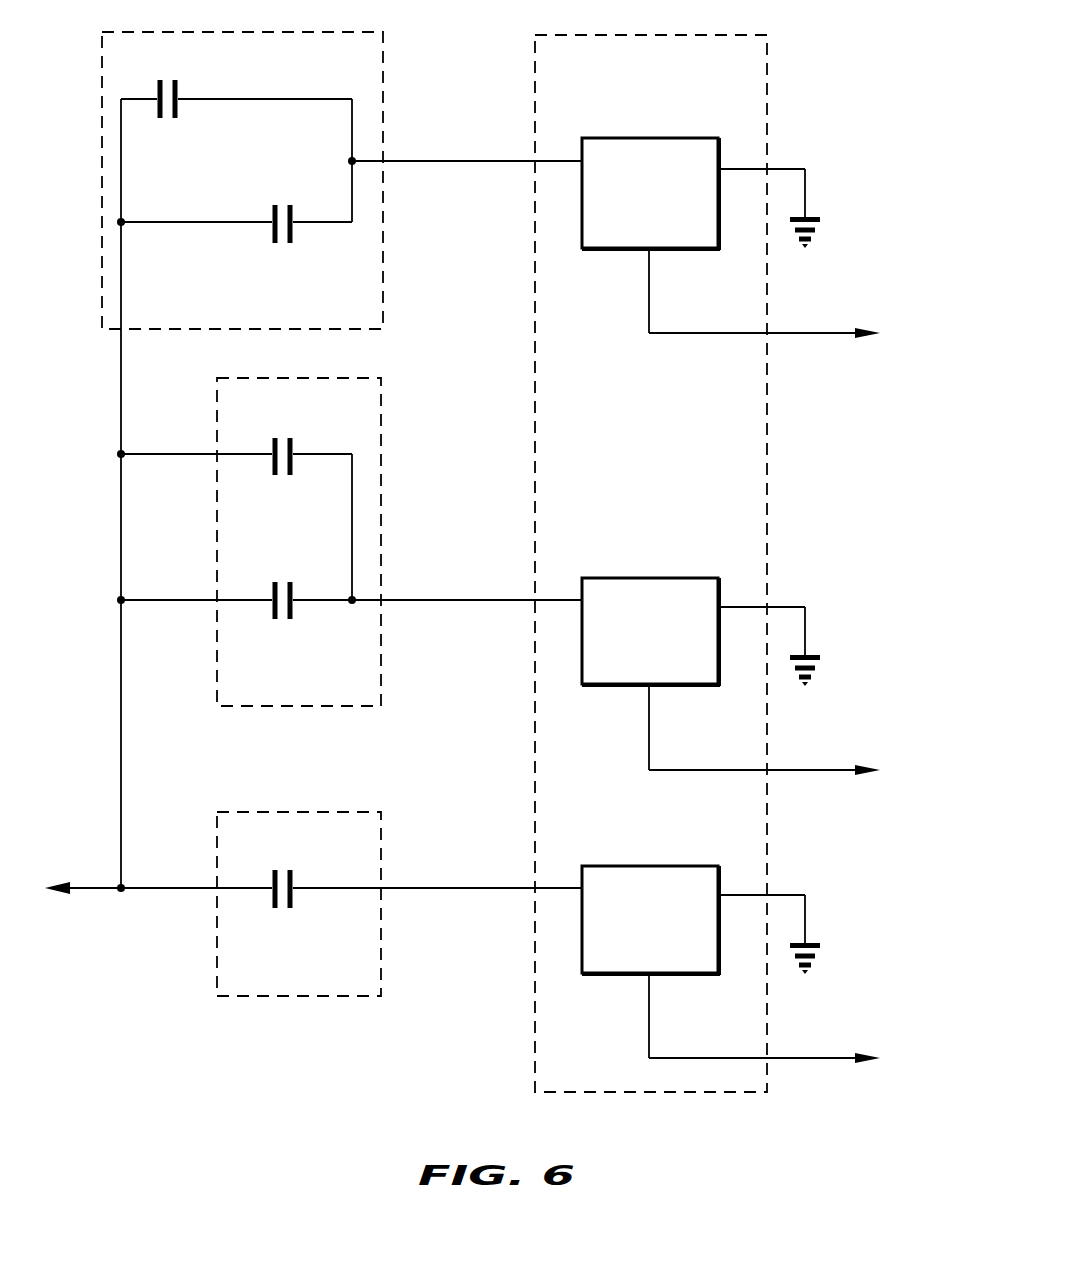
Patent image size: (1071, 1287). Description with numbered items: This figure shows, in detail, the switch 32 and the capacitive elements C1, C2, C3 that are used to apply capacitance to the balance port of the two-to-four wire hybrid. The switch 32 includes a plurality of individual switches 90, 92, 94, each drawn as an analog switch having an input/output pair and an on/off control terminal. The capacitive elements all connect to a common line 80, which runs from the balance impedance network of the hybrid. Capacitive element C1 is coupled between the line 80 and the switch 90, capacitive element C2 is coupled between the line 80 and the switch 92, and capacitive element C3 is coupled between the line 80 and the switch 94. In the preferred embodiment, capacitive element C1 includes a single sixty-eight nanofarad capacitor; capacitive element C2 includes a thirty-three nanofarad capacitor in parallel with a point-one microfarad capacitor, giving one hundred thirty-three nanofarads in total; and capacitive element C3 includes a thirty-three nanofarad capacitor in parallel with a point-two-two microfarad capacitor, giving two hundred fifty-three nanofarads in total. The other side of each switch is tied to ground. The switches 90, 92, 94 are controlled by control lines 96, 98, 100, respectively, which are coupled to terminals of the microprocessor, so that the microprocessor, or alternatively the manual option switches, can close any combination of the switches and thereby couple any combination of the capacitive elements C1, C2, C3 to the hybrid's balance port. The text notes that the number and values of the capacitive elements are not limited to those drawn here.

The switching circuit 32 is at (776, 111).
The line 80 is at (88, 890).
The switch 90 is at (618, 989).
The switch 92 is at (618, 701).
The switch 94 is at (618, 262).
The line 96 is at (779, 1023).
The line 98 is at (779, 736).
The line 100 is at (784, 298).
The capacitive element C1 is at (394, 976).
The capacitive element C2 is at (392, 672).
The capacitive element C3 is at (392, 289).